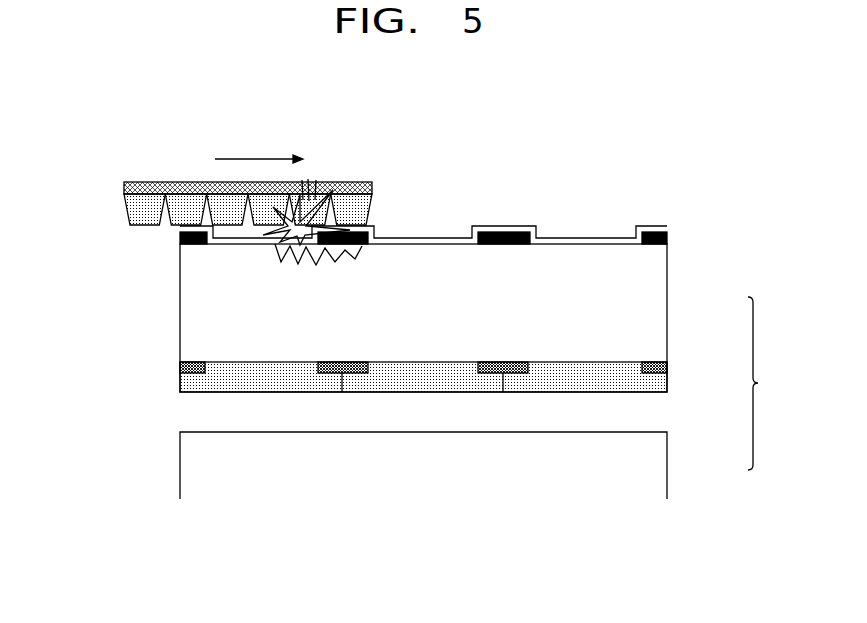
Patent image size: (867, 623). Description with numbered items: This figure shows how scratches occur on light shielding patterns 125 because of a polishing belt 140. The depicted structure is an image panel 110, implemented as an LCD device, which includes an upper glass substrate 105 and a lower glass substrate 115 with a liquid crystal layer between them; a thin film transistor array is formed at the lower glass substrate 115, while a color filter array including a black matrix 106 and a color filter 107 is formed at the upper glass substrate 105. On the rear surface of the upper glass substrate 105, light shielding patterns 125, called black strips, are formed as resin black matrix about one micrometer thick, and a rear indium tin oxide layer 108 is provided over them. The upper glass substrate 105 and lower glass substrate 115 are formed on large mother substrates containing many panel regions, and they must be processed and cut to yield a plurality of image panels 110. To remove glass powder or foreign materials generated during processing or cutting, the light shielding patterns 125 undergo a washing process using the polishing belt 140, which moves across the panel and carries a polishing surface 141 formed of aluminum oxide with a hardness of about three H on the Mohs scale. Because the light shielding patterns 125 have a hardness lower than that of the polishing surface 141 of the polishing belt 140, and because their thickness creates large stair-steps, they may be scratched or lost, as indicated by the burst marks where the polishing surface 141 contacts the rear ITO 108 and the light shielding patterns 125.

The polishing belt 140 is at (135, 179).
The polishing surface 141 is at (137, 210).
The rear indium tin oxide (ITO) 108 is at (667, 229).
The light shielding patterns 125 is at (667, 240).
The upper glass substrate 105 is at (660, 306).
The black matrix 106 is at (667, 364).
The color filter 107 is at (660, 384).
The lower glass substrate 115 is at (660, 460).
The image panel 110 is at (771, 383).